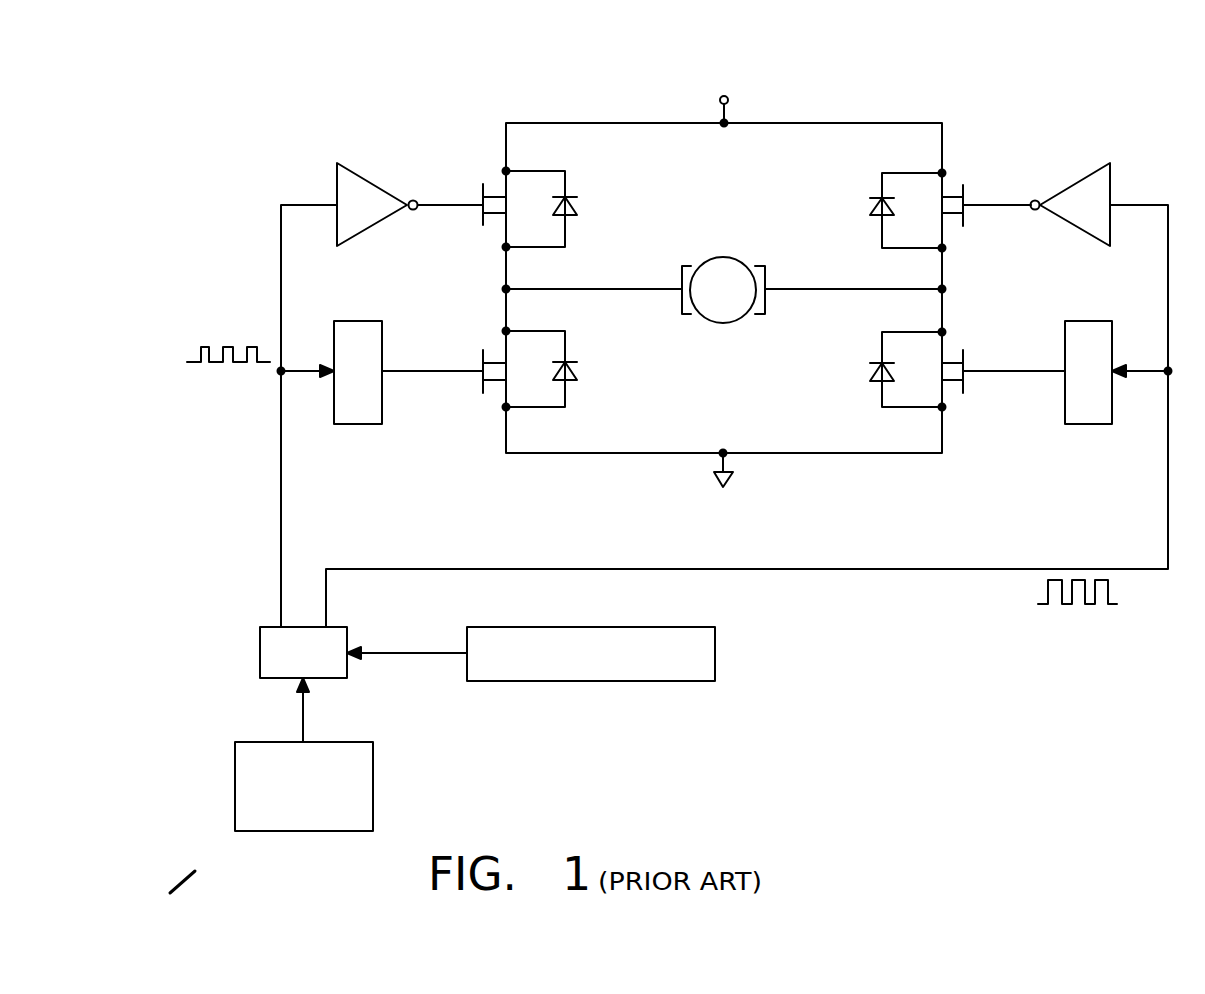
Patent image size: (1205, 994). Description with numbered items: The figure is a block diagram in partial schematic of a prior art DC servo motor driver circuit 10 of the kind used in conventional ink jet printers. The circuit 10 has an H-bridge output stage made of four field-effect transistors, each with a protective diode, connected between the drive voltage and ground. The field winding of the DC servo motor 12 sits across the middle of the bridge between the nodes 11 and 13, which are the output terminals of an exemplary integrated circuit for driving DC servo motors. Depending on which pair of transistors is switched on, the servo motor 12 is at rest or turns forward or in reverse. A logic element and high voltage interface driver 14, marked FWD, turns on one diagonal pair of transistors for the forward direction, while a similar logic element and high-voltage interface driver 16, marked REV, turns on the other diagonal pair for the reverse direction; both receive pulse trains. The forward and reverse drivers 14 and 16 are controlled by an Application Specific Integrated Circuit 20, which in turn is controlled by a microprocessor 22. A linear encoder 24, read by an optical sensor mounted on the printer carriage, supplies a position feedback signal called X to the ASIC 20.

The DC servo motor driver circuit 10 is at (679, 432).
The node 11 is at (512, 280).
The DC servo motor 12 is at (723, 323).
The node 13 is at (937, 293).
The logic element and high voltage interface driver 14 is at (358, 424).
The logic element and high-voltage interface driver 16 is at (1090, 425).
The Application Specific Integrated Circuit 20 is at (260, 648).
The microprocessor 22 is at (342, 742).
The linear encoder 24 is at (630, 681).